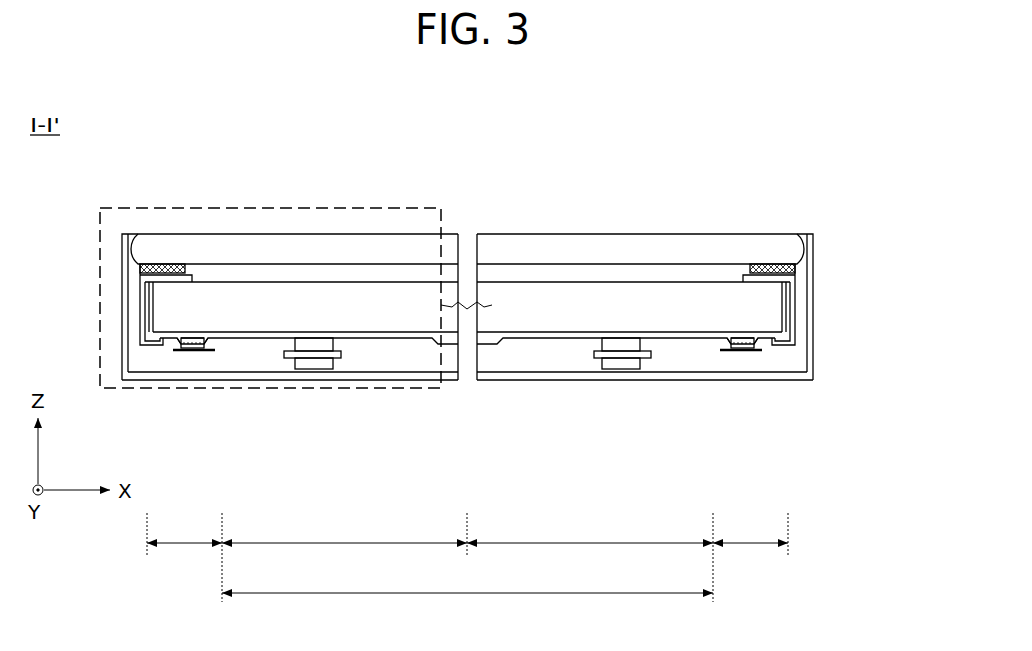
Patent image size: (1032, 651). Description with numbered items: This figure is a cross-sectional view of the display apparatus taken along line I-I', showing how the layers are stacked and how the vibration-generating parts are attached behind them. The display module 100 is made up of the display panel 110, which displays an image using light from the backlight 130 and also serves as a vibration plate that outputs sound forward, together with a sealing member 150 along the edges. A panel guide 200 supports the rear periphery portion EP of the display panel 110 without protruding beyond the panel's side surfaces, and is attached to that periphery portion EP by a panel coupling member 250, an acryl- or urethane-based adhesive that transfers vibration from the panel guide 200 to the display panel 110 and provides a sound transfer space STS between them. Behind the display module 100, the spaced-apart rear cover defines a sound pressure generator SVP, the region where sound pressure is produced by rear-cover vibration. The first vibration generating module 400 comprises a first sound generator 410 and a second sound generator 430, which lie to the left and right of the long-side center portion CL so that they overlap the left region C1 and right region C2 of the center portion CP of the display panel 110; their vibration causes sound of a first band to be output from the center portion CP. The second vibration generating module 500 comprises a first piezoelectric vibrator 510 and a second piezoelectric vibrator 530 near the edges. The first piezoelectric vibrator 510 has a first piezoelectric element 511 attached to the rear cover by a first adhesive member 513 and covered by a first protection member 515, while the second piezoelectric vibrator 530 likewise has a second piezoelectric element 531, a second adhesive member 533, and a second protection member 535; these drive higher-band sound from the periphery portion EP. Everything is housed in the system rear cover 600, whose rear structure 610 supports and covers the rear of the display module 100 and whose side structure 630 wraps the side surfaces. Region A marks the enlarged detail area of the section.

The display module 100 is at (460, 221).
The display panel 110 is at (218, 250).
The backlight 130 is at (137, 150).
The sealing member 150 is at (141, 264).
The panel guide 200 is at (792, 300).
The panel coupling member 250 is at (139, 272).
The first vibration generating module 400 is at (467, 397).
The first sound generator 410 is at (320, 370).
The second sound generator 430 is at (626, 370).
The second vibration generating module 500 is at (466, 411).
The first piezoelectric vibrator 510 is at (202, 410).
The first piezoelectric element 511 is at (191, 349).
The first adhesive member 513 is at (207, 342).
The first protection member 515 is at (179, 395).
The second piezoelectric vibrator 530 is at (731, 411).
The second piezoelectric element 531 is at (742, 349).
The second adhesive member 533 is at (717, 342).
The second protection member 535 is at (759, 352).
The system rear cover 600 is at (526, 315).
The rear structure 610 is at (796, 379).
The side structure 630 is at (808, 329).
The enlarged region A is at (441, 208).
The sound pressure generator SVP is at (341, 325).
The sound transfer space STS is at (413, 272).
The center portion CL is at (468, 500).
The periphery portion EP is at (467, 567).
The left region C1 is at (336, 567).
The right region C2 is at (599, 567).
The center portion CP is at (469, 614).